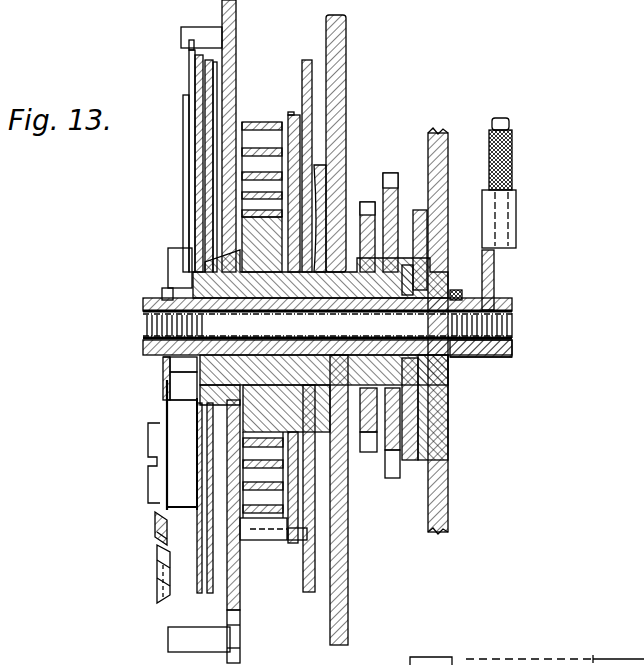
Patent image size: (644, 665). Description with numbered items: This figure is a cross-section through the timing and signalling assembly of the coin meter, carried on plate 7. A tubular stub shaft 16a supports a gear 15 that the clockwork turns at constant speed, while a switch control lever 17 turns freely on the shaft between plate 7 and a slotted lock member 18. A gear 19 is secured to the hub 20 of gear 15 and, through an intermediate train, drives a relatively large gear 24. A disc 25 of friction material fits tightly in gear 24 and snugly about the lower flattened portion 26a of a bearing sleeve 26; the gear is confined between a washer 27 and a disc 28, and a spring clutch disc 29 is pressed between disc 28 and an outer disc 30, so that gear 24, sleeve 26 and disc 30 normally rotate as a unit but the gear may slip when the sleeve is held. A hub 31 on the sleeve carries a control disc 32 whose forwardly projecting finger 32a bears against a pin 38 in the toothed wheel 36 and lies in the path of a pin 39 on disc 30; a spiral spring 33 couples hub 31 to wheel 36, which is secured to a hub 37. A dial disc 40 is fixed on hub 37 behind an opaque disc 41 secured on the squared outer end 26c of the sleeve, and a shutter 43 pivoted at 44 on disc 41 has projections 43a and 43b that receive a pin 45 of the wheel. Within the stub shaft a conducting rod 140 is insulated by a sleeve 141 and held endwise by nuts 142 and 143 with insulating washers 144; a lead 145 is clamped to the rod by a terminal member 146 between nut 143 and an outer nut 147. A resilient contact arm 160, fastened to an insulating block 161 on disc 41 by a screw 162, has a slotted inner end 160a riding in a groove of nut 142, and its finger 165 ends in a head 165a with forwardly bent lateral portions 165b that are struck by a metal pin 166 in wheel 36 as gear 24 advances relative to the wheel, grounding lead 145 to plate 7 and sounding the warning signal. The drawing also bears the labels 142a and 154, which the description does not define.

The plate 7 is at (449, 150).
The gear 15 is at (390, 174).
The stub shaft 16a is at (449, 370).
The switch control lever 17 is at (428, 226).
The slotted lock member 18 is at (412, 278).
The gear 19 is at (366, 203).
The hub 20 is at (392, 380).
The gear 24 is at (346, 44).
The disc of friction material 25 is at (340, 342).
The bearing sleeve 26 is at (183, 378).
The lower flattened portion 26a is at (308, 342).
The outer squared end 26c is at (224, 342).
The washer 27 is at (352, 445).
The disc 28 is at (348, 556).
The spring clutch disc 29 is at (327, 168).
The outer disc 30 is at (307, 61).
The hub 31 is at (272, 342).
The control disc 32 is at (292, 113).
The finger 32a is at (253, 506).
The spiral spring 33 is at (262, 128).
The toothed wheel 36 is at (231, 72).
The hub 37 is at (193, 497).
The second pin 38 is at (258, 541).
The pin 39 is at (298, 541).
The dial disc 40 is at (214, 148).
The opaque disc 41 is at (207, 128).
The shutter 43 is at (197, 82).
The projection 43a is at (191, 64).
The projection 43b is at (189, 44).
The pivot 44 is at (186, 102).
The pin 45 is at (213, 34).
The conducting rod 140 is at (512, 325).
The sleeve 141 is at (482, 262).
The nut 142 is at (163, 372).
The plate edge 142a is at (163, 368).
The nut 143 is at (490, 358).
The insulating washers 144 is at (472, 291).
The lead 145 is at (512, 165).
The terminal member 146 is at (516, 237).
The outer nut 147 is at (512, 346).
The line 154 is at (458, 659).
The contact arm 160 is at (146, 409).
The slot 160a is at (160, 298).
The insulating block 161 is at (168, 269).
The screw 162 is at (158, 484).
The finger 165 is at (157, 515).
The head 165a is at (157, 550).
The lateral portions 165b is at (157, 533).
The metal pin 166 is at (175, 638).